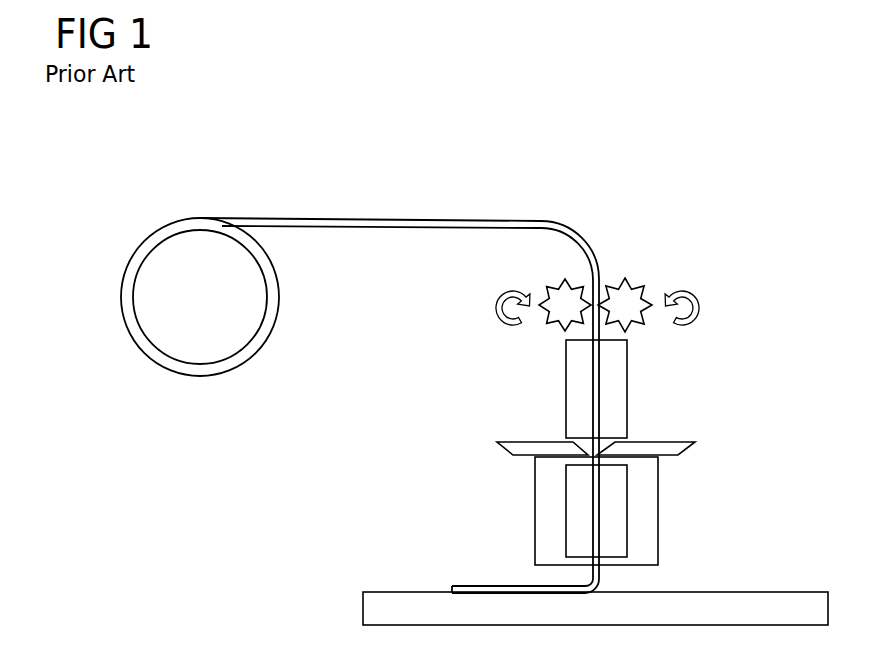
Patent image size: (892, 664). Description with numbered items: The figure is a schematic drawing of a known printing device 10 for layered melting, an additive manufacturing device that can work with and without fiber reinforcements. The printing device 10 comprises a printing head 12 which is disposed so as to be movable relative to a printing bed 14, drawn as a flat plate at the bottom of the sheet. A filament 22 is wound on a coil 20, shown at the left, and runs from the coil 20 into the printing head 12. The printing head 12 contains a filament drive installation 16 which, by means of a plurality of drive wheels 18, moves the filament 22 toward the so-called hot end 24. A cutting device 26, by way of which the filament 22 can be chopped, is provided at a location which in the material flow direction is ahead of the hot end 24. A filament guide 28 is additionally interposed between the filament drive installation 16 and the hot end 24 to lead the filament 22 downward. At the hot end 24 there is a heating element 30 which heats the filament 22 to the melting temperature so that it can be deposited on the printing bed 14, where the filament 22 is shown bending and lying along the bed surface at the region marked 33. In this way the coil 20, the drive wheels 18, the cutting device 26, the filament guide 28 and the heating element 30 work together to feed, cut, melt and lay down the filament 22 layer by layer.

The printing device 10 is at (176, 180).
The printing head 12 is at (660, 210).
The printing bed 14 is at (787, 601).
The filament drive installation 16 is at (656, 270).
The drive wheels 18 is at (625, 279).
The coil 20 is at (266, 300).
The filament 22 is at (362, 219).
The hot end 24 is at (503, 486).
The cutting device 26 is at (507, 428).
The filament guide 28 is at (618, 385).
The heating element 30 is at (620, 517).
The bend / deflection point 33 is at (572, 578).